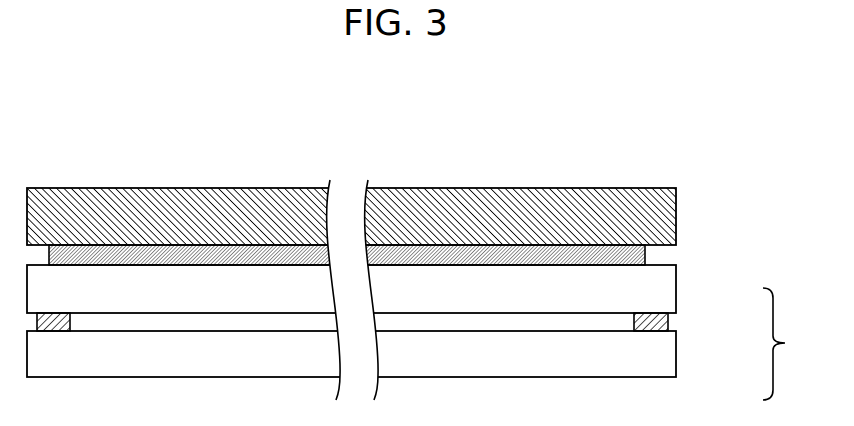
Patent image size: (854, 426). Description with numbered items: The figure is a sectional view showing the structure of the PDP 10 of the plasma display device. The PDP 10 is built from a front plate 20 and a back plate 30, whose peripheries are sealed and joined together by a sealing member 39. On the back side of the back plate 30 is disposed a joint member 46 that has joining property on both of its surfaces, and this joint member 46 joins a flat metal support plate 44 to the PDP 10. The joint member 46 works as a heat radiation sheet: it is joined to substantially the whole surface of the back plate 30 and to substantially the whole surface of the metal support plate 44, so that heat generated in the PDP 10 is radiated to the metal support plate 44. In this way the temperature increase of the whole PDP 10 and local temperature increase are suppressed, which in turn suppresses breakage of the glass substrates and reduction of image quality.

The PDP 10 is at (792, 344).
The front plate 20 is at (645, 353).
The back plate 30 is at (655, 277).
The sealing member 39 is at (668, 322).
The metal support plate 44 is at (578, 200).
The joint member 46 is at (653, 251).